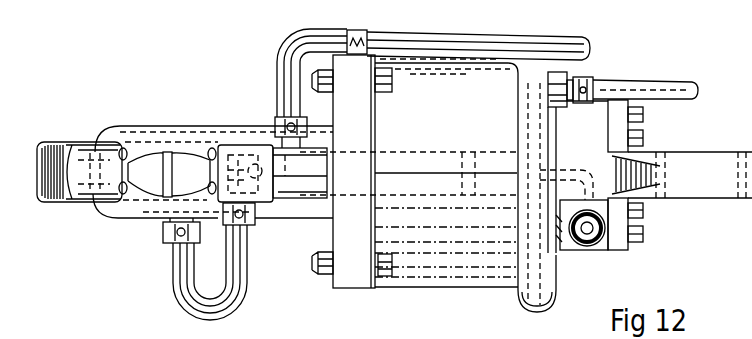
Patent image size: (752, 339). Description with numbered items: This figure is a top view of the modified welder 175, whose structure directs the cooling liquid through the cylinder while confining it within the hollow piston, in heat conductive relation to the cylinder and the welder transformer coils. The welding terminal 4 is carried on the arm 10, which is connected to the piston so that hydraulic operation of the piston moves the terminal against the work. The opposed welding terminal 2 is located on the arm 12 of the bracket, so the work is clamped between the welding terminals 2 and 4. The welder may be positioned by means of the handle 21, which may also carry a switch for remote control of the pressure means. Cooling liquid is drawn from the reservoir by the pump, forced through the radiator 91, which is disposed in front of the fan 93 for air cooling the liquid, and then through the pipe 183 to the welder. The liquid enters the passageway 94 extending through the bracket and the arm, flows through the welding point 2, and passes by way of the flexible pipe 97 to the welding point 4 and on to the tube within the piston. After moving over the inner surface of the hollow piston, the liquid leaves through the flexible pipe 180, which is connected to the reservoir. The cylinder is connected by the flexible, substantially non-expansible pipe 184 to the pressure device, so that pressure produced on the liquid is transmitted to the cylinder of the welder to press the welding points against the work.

The welding terminal 2 is at (143, 166).
The welding terminal 4 is at (193, 166).
The arm 10 is at (247, 160).
The arm 12 is at (85, 152).
The handle 21 is at (714, 182).
The radiator 91 is at (331, 338).
The fan 93 is at (465, 199).
The passageway 94 is at (531, 297).
The flexible pipe 97 is at (191, 302).
The welder 175 is at (400, 77).
The flexible pipe 180 is at (492, 50).
The pipe 183 is at (663, 87).
The flexible pipe 184 is at (609, 251).